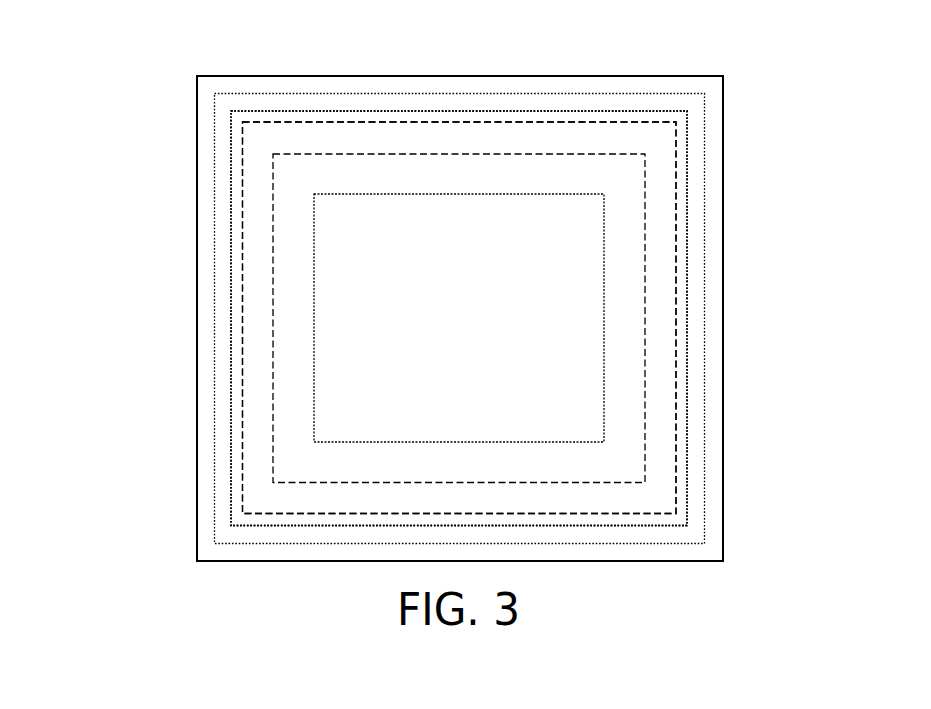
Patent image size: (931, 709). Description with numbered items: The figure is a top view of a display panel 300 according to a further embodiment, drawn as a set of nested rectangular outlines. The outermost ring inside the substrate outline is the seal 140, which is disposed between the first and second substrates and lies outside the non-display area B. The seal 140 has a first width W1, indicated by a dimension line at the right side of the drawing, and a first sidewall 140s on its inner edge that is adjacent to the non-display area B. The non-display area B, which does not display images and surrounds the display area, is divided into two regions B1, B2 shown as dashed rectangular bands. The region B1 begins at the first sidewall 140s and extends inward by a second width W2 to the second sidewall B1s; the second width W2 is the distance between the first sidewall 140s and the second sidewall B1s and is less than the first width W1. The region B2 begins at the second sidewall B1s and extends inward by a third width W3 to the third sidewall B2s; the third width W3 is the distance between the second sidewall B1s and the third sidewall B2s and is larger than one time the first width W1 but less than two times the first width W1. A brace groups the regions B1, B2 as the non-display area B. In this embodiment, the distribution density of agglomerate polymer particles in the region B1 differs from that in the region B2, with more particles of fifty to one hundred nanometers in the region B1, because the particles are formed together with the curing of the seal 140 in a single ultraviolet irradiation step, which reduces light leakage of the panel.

The display panel 300 is at (88, 91).
The seal 140 is at (695, 365).
The first sidewall 140s is at (687, 492).
The region B1 is at (681, 115).
The second sidewall B1s is at (676, 438).
The region B2 is at (661, 143).
The third sidewall B2s is at (646, 393).
The non-display area B is at (772, 102).
The first width W1 is at (652, 227).
The second width W2 is at (642, 277).
The third width W3 is at (612, 325).